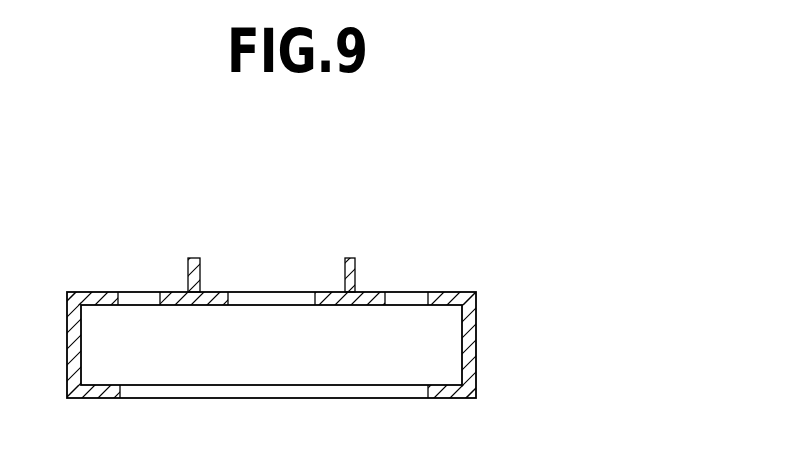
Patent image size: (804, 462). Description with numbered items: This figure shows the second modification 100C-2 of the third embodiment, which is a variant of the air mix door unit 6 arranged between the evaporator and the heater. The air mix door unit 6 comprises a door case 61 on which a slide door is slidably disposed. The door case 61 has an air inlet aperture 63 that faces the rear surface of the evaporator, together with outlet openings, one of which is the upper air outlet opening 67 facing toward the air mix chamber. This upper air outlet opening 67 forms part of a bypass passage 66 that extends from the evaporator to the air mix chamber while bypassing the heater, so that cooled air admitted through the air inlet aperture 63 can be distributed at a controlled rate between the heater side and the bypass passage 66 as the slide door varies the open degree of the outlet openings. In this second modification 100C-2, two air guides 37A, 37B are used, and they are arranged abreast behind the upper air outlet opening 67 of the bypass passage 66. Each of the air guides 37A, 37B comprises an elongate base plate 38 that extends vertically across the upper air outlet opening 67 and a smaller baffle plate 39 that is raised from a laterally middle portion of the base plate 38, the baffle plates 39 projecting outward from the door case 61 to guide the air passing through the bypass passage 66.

The second modification 100C-2 is at (538, 163).
The air mix door unit 6 is at (472, 277).
The air guide 37A is at (357, 257).
The air guide 37B is at (205, 257).
The elongate base plate 38 is at (202, 301).
The smaller baffle plate 39 is at (188, 275).
The door case 61 is at (477, 308).
The air inlet aperture 63 is at (415, 398).
The bypass passage 66 is at (443, 352).
The upper air outlet opening 67 is at (418, 293).